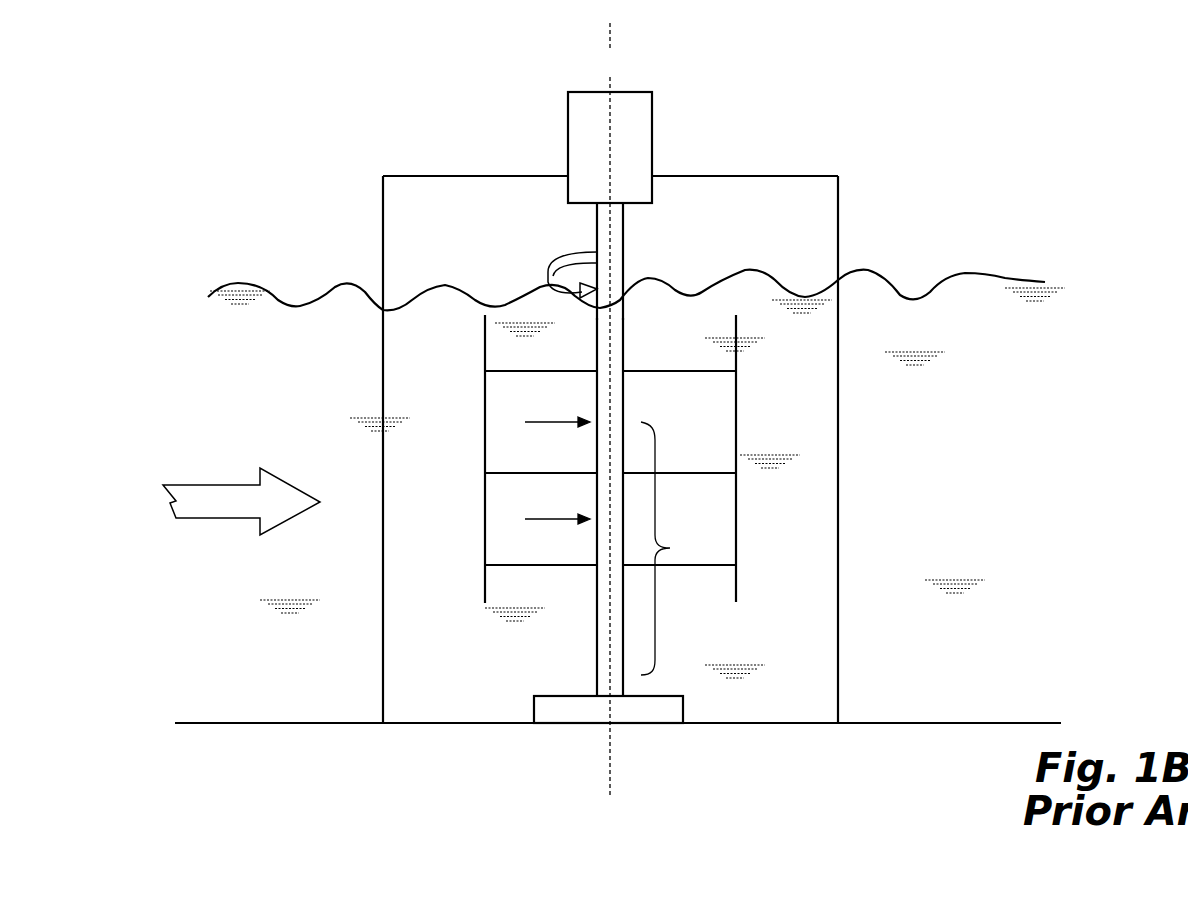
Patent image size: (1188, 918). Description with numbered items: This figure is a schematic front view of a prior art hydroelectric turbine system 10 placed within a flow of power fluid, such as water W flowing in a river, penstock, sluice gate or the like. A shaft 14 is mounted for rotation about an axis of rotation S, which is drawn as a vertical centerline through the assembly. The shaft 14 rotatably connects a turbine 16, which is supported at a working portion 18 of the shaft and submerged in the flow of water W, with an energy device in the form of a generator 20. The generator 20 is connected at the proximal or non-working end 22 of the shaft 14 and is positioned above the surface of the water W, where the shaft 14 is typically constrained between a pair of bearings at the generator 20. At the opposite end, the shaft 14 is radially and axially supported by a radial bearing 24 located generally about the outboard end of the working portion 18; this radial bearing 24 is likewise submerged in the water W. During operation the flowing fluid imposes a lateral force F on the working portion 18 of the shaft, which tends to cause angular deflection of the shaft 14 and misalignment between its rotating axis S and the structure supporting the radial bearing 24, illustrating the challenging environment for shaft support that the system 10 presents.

The hydroelectric turbine system 10 is at (324, 190).
The shaft 14 is at (624, 640).
The turbine 16 is at (736, 410).
The working portion 18 is at (670, 548).
The generator 20 is at (578, 120).
The non-working end 22 is at (624, 205).
The radial bearing 24 is at (612, 712).
The axis of rotation S is at (612, 36).
The lateral force F is at (551, 423).
The water W is at (612, 514).